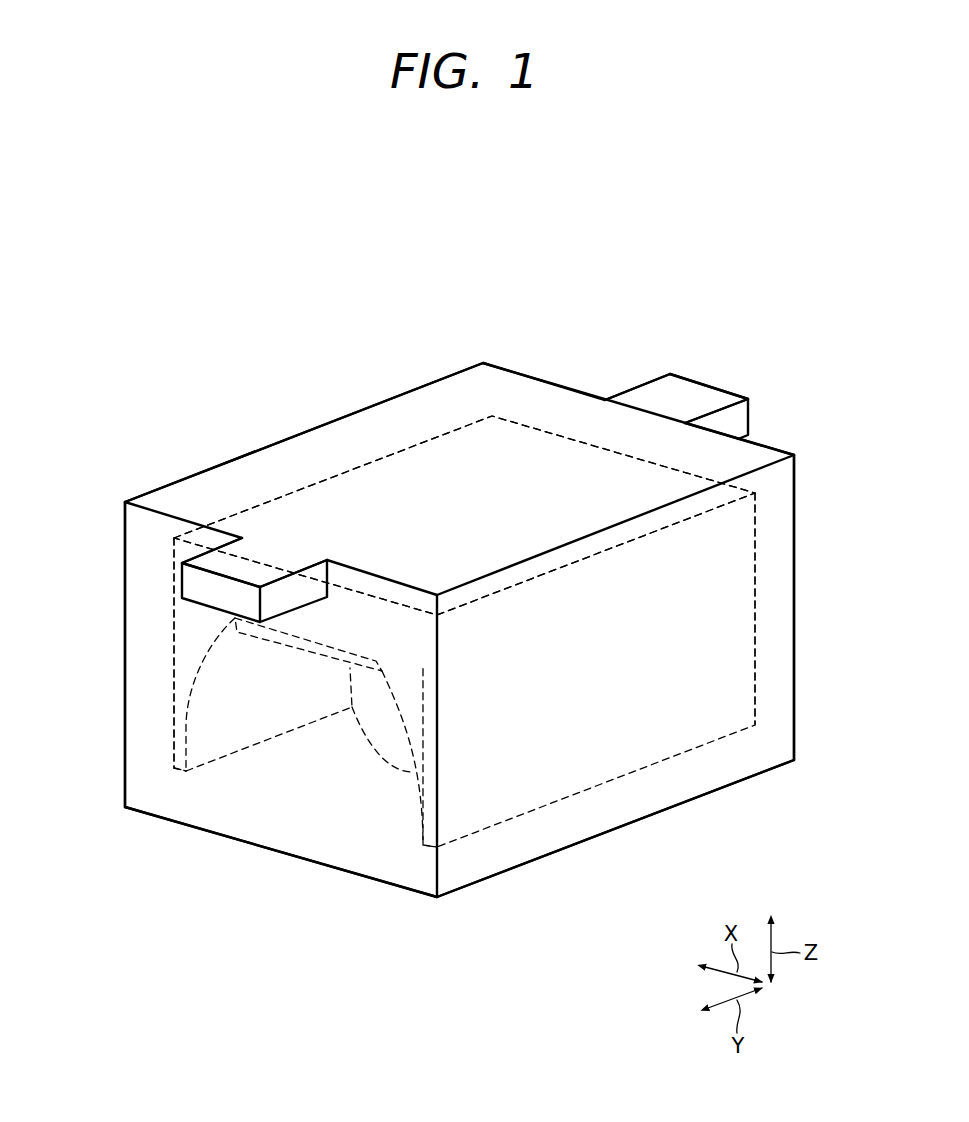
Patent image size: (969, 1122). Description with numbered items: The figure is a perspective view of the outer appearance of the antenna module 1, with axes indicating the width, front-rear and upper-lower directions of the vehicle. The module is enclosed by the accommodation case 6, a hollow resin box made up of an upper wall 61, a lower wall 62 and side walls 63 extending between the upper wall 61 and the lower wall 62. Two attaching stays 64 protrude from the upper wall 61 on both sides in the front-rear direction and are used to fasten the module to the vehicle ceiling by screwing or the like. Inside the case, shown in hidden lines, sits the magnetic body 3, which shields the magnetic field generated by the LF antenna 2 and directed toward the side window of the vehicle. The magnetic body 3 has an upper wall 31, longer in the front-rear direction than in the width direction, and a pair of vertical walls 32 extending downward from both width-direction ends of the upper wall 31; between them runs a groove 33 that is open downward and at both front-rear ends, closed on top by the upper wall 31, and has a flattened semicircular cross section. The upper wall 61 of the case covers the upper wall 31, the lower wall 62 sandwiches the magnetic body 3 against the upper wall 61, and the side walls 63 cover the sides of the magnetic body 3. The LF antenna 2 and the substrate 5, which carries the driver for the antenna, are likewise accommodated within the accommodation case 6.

The antenna module 1 is at (722, 334).
The LF antenna 2 is at (372, 764).
The magnetic body 3 is at (620, 781).
The substrate 5 is at (298, 652).
The accommodation case 6 is at (542, 372).
The upper wall 31 is at (440, 470).
The vertical wall 32 is at (187, 672).
The groove 33 is at (225, 730).
The upper wall 61 is at (340, 443).
The lower wall 62 is at (290, 860).
The side wall 63 is at (155, 590).
The attaching stay 64 is at (220, 563).